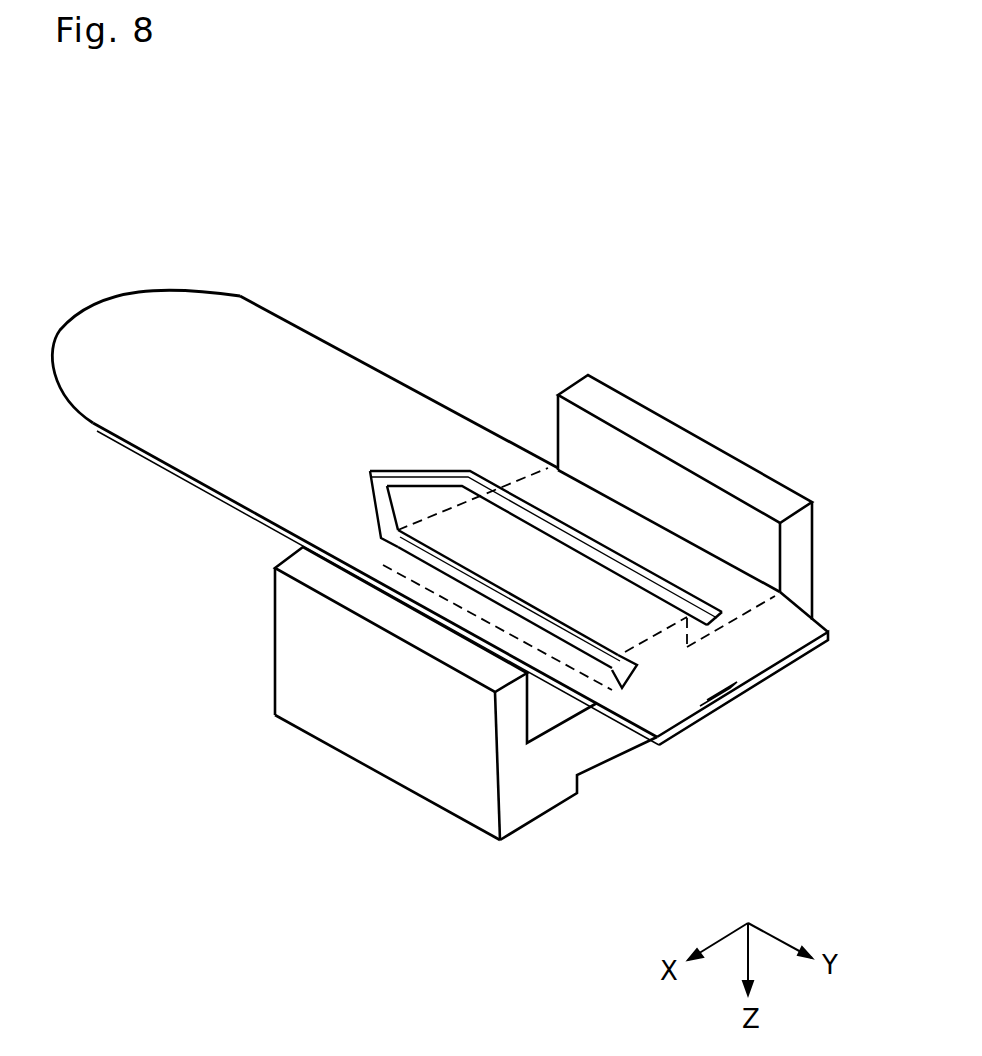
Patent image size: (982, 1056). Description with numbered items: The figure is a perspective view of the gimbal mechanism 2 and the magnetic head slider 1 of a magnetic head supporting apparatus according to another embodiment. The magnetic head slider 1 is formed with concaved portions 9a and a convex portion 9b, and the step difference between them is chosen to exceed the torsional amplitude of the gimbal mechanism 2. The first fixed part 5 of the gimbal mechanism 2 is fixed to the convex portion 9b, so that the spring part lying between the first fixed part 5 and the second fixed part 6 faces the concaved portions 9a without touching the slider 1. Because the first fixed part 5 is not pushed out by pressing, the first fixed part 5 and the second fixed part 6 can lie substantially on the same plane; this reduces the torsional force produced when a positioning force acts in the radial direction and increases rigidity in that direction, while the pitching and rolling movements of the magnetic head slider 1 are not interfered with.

The magnetic head slider 1 is at (574, 607).
The gimbal mechanism 2 is at (419, 321).
The first fixed part 5 is at (473, 510).
The second fixed part 6 is at (146, 302).
The concaved portions 9a is at (612, 769).
The convex portion 9b is at (673, 655).